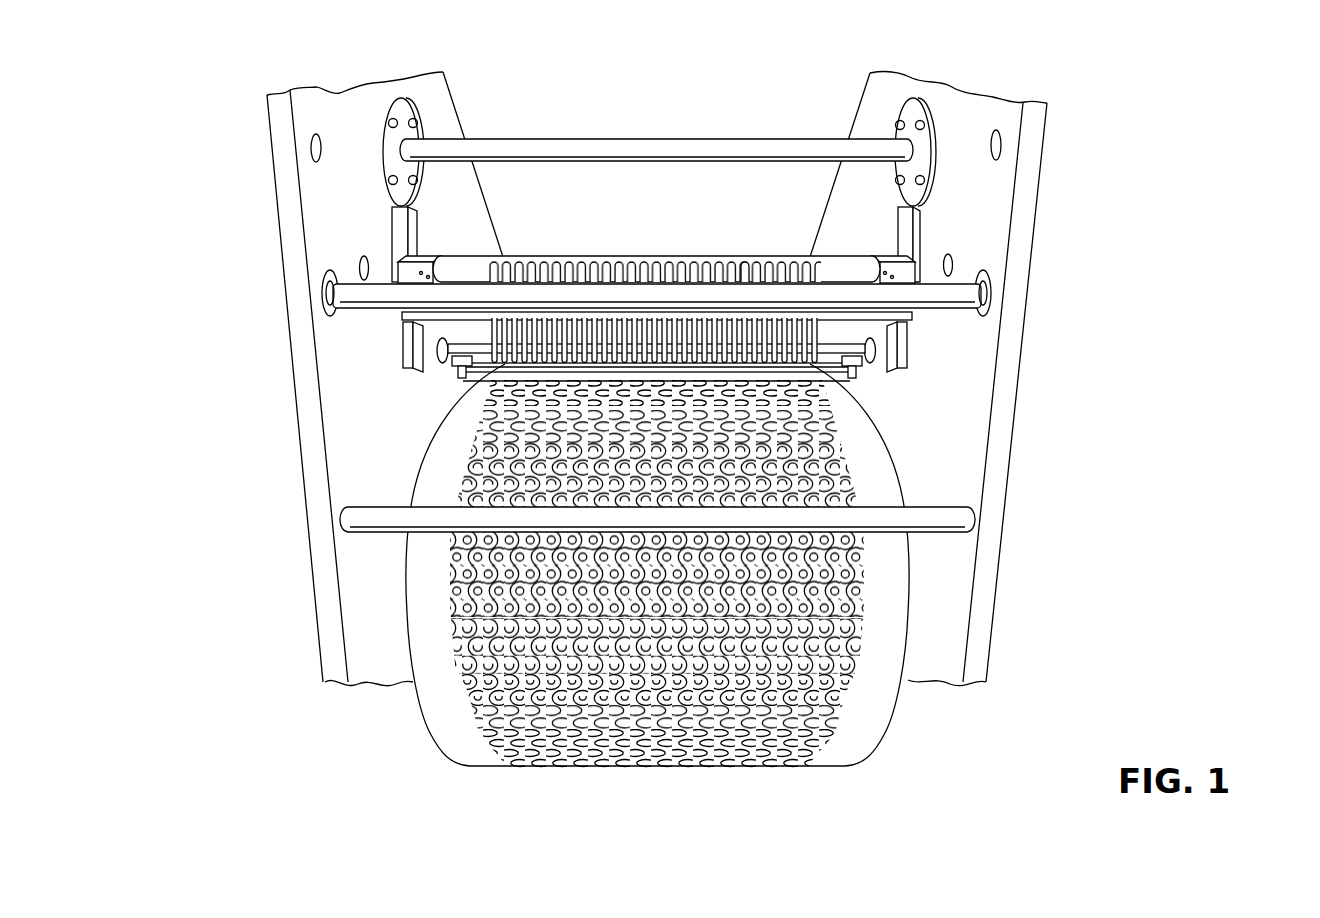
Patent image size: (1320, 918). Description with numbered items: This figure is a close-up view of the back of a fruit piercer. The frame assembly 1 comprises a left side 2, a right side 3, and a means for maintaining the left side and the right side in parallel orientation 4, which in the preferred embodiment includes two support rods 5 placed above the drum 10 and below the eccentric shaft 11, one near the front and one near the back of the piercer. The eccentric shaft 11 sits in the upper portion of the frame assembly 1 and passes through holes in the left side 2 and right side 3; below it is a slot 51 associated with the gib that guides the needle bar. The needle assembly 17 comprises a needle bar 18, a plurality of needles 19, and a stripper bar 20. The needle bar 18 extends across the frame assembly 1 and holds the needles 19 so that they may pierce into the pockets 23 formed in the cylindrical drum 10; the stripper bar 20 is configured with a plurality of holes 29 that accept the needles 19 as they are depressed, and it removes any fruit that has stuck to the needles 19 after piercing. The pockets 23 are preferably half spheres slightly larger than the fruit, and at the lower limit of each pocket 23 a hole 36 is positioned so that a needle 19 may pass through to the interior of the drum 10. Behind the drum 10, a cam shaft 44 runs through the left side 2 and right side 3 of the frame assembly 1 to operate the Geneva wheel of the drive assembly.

The frame assembly 1 is at (1006, 266).
The left side 2 is at (998, 483).
The right side 3 is at (318, 478).
The means for maintaining the left side and the right side in parallel orientation 4 is at (966, 312).
The support rod 5 is at (452, 150).
The drum 10 is at (871, 716).
The eccentric shaft 11 is at (413, 183).
The needle assembly 17 is at (700, 260).
The needle bar 18 is at (695, 364).
The needle 19 is at (747, 260).
The stripper bar 20 is at (827, 372).
The pocket 23 is at (660, 721).
The hole 29 is at (478, 378).
The hole 36 is at (660, 527).
The cam shaft 44 is at (427, 518).
The slot 51 is at (400, 223).